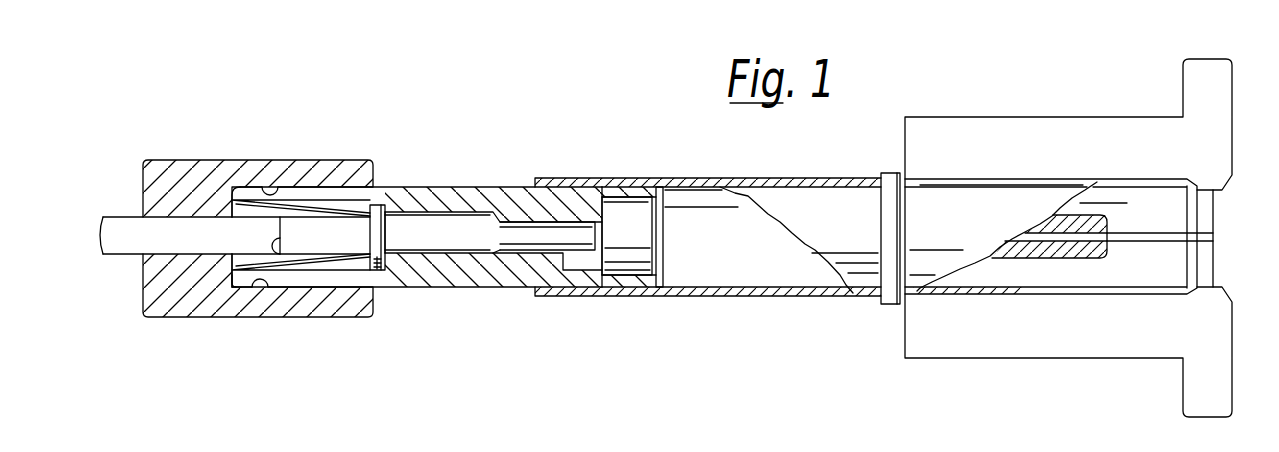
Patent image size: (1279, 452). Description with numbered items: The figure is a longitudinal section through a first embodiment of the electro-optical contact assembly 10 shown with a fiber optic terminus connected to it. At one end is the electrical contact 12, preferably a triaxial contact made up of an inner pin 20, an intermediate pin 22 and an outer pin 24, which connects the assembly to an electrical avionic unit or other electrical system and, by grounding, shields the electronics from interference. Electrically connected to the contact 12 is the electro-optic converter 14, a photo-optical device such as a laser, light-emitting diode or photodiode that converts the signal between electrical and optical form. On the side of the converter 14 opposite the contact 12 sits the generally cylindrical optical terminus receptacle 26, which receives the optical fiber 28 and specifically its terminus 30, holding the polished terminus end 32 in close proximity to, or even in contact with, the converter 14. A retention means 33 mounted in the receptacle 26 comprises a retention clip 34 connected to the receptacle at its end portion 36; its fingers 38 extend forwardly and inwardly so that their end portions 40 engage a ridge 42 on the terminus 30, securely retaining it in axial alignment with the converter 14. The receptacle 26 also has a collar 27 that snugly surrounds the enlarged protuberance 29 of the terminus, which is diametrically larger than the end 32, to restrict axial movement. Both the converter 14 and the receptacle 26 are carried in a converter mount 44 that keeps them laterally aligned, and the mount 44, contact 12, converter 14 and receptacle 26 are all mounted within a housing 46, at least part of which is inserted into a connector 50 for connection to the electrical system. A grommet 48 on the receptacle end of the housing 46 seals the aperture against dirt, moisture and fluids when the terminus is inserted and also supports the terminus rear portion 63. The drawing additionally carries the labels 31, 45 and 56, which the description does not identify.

The electro-optical contact assembly 10 is at (573, 130).
The electrical contact 12 is at (990, 297).
The electro-optic converter 14 is at (610, 202).
The inner pin 20 is at (1110, 253).
The intermediate pin 22 is at (1100, 257).
The outer pin 24 is at (950, 288).
The optical terminus receptacle 26 is at (453, 198).
The collar 27 is at (490, 193).
The optical fiber 28 is at (122, 222).
The protuberance 29 is at (477, 253).
The terminus 30 is at (395, 223).
The tube wall 31 is at (450, 253).
The terminus end 32 is at (583, 237).
The retention means 33 is at (263, 280).
The retention clip 34 is at (283, 200).
The end portion 36 is at (233, 280).
The fingers 38 is at (337, 267).
The finger end portions 40 is at (367, 205).
The ridge 42 is at (372, 267).
The converter mount 44 is at (628, 280).
The groove 45 is at (250, 190).
The housing 46 is at (783, 297).
The grommet 48 is at (183, 170).
The connector 50 is at (1187, 60).
The plate 56 is at (656, 295).
The terminus rear portion 63 is at (277, 267).